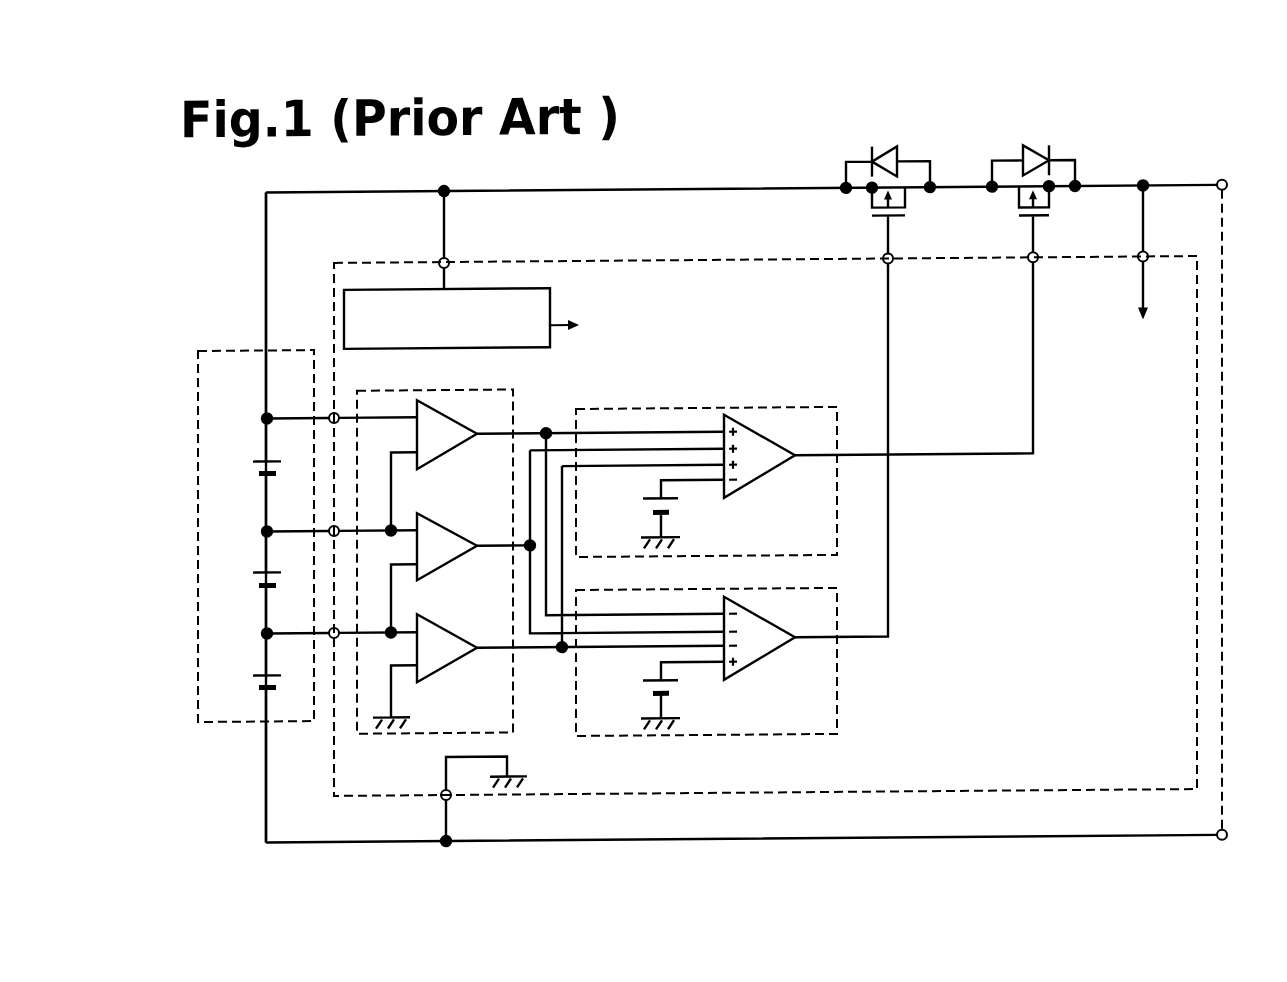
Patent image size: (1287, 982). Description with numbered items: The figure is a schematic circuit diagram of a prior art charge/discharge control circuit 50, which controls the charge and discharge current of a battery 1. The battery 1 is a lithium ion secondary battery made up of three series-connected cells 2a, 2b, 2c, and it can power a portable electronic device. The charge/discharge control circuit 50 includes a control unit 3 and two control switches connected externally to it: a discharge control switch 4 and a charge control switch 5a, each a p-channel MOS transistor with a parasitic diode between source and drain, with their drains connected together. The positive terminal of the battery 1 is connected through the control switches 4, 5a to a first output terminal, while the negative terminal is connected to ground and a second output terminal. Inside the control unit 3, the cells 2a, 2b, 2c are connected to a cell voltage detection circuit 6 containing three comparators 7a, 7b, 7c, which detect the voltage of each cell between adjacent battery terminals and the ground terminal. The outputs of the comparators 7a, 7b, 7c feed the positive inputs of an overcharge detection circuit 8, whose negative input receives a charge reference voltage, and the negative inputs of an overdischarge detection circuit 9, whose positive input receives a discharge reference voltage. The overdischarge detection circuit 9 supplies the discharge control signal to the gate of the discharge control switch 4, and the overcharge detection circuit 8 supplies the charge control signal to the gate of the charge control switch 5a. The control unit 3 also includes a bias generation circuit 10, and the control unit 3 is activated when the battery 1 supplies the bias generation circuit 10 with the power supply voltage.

The battery 1 is at (248, 346).
The cell 2a is at (256, 458).
The cell 2b is at (256, 569).
The cell 2c is at (256, 672).
The control unit 3 is at (672, 259).
The discharge control switch 4 is at (872, 204).
The charge control switch 5a is at (1019, 204).
The cell voltage detection circuit 6 is at (515, 405).
The comparator 7a is at (450, 448).
The comparator 7b is at (450, 559).
The comparator 7c is at (450, 661).
The overcharge detection circuit 8 is at (742, 408).
The overdischarge detection circuit 9 is at (710, 736).
The bias generation circuit 10 is at (405, 350).
The charge/discharge control circuit 50 is at (1121, 853).